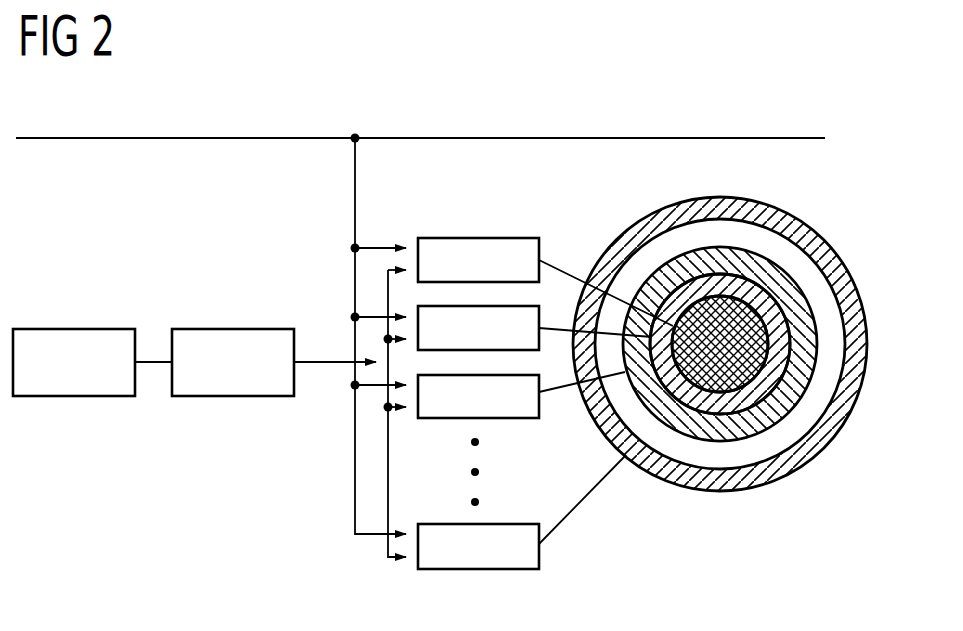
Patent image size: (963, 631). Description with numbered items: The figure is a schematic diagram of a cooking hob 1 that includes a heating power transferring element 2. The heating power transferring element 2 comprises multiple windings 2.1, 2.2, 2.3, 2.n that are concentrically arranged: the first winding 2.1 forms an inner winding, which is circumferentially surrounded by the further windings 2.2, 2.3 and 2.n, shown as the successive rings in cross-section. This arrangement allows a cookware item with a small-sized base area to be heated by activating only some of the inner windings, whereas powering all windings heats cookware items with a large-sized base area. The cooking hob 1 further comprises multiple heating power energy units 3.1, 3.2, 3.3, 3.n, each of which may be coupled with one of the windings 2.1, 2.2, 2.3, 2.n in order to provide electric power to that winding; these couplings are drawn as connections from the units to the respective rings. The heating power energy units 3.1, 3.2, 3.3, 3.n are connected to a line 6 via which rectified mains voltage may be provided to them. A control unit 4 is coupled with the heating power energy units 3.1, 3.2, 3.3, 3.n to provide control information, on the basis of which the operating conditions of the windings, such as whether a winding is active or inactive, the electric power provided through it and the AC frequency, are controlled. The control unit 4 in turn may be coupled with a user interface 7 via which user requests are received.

The cooking hob 1 is at (759, 116).
The heating power transferring element 2 is at (834, 213).
The first winding 2.1 is at (752, 306).
The further winding 2.2 is at (780, 340).
The further winding 2.3 is at (767, 413).
The further winding 2.n is at (730, 478).
The heating power energy unit 3.1 is at (478, 238).
The heating power energy unit 3.2 is at (464, 351).
The heating power energy unit 3.3 is at (490, 419).
The heating power energy unit 3.n is at (490, 570).
The control unit 4 is at (232, 329).
The line 6 is at (238, 138).
The user interface 7 is at (73, 329).